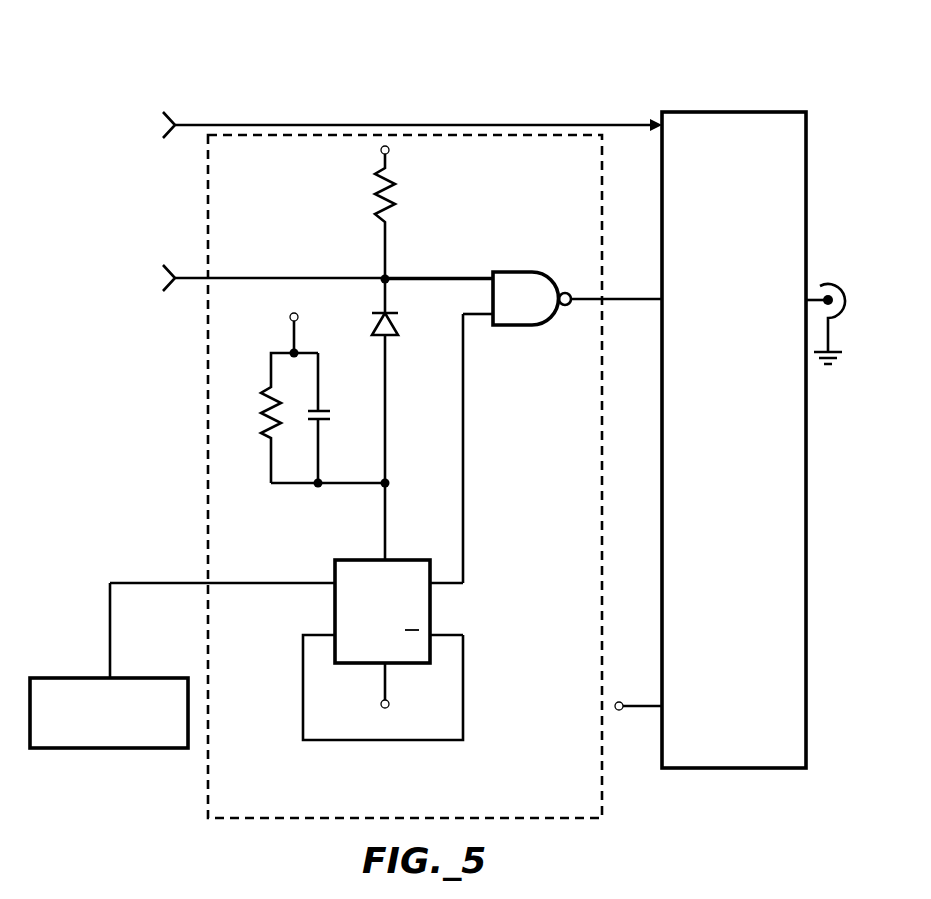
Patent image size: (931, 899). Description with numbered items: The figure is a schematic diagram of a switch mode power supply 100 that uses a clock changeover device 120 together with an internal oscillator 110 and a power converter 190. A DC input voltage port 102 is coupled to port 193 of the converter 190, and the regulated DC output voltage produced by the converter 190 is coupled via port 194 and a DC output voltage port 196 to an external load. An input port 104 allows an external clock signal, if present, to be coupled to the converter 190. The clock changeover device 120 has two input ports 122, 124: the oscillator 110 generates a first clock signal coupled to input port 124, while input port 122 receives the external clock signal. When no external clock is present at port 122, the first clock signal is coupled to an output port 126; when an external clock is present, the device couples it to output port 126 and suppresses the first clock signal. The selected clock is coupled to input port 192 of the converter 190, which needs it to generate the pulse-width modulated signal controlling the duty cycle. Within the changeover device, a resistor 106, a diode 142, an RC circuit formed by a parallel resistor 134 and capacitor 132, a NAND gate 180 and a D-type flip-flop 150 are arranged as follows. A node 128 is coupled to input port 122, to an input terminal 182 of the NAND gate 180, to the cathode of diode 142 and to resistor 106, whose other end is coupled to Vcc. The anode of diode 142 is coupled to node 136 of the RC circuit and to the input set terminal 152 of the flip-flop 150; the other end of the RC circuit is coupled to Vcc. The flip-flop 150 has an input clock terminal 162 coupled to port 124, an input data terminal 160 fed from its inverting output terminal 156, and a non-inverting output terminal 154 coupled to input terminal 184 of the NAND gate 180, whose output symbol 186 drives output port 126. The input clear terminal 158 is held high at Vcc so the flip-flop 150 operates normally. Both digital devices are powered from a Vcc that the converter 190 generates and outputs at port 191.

The switch mode power supply 100 is at (505, 68).
The DC input voltage port 102 is at (175, 138).
The input port 104 is at (175, 291).
The resistor 106 is at (395, 192).
The internal oscillator 110 is at (62, 748).
The clock changeover device 120 is at (602, 790).
The input port 122 is at (208, 278).
The input port 124 is at (208, 583).
The output port 126 is at (600, 303).
The node 128 is at (385, 279).
The capacitor 132 is at (320, 408).
The resistor 134 is at (271, 440).
The node 136 is at (320, 480).
The diode 142 is at (390, 336).
The D-type flip-flop 150 is at (350, 560).
The input set terminal 152 is at (386, 560).
The non-inverting output terminal 154 is at (432, 583).
The inverting output terminal 156 is at (432, 635).
The input clear terminal 158 is at (386, 672).
The input data terminal 160 is at (335, 635).
The input clock terminal 162 is at (335, 583).
The NAND gate 180 is at (528, 326).
The input terminal 182 is at (493, 279).
The input terminal 184 is at (493, 314).
The NAND gate 186 is at (570, 290).
The power converter 190 is at (710, 768).
The port 191 is at (662, 700).
The input port 192 is at (661, 290).
The port 193 is at (661, 118).
The port 194 is at (808, 298).
The DC output voltage port 196 is at (822, 286).